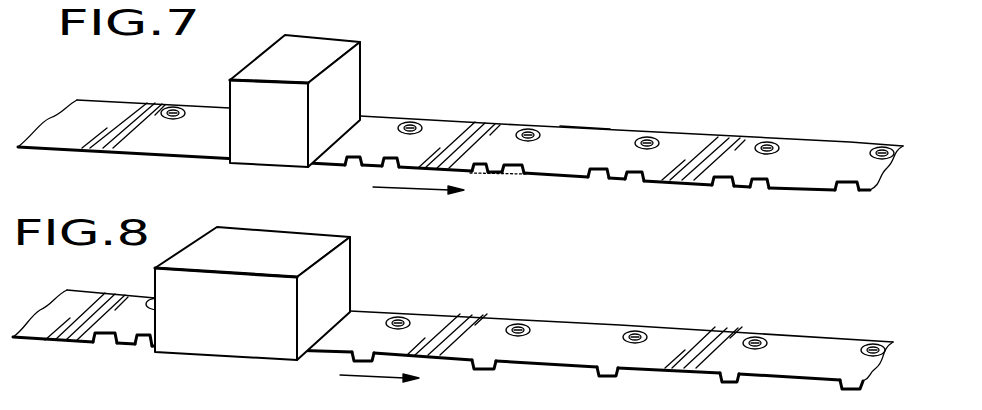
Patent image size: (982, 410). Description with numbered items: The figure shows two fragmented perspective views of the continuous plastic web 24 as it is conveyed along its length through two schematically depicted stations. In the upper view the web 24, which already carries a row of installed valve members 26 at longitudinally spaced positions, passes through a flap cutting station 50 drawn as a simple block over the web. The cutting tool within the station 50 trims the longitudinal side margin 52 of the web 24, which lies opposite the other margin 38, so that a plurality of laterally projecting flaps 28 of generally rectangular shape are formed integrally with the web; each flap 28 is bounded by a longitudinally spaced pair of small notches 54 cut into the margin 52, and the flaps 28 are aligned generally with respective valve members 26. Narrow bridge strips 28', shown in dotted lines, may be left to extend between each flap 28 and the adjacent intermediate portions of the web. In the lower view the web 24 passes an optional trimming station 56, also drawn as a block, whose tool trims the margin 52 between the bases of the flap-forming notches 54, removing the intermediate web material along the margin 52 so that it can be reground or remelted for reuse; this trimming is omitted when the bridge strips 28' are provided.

In FIG. 7, the web 24 is at (115, 108).
In FIG. 8, the web 24 is at (497, 321).
In FIG. 7, the valve members 26 is at (167, 116).
In FIG. 8, the valve members 26 is at (647, 335).
In FIG. 7, the flaps 28 is at (558, 193).
In FIG. 8, the flaps 28 is at (607, 378).
In FIG. 7, the bridge strips 28' is at (504, 210).
In FIG. 7, the margin 38 is at (580, 127).
In FIG. 7, the flap cutting station 50 is at (353, 66).
In FIG. 7, the longitudinal side margin 52 is at (555, 179).
In FIG. 8, the longitudinal side margin 52 is at (537, 368).
In FIG. 7, the notches 54 is at (383, 157).
In FIG. 8, the notches 54 is at (138, 344).
In FIG. 8, the trimming station 56 is at (340, 259).